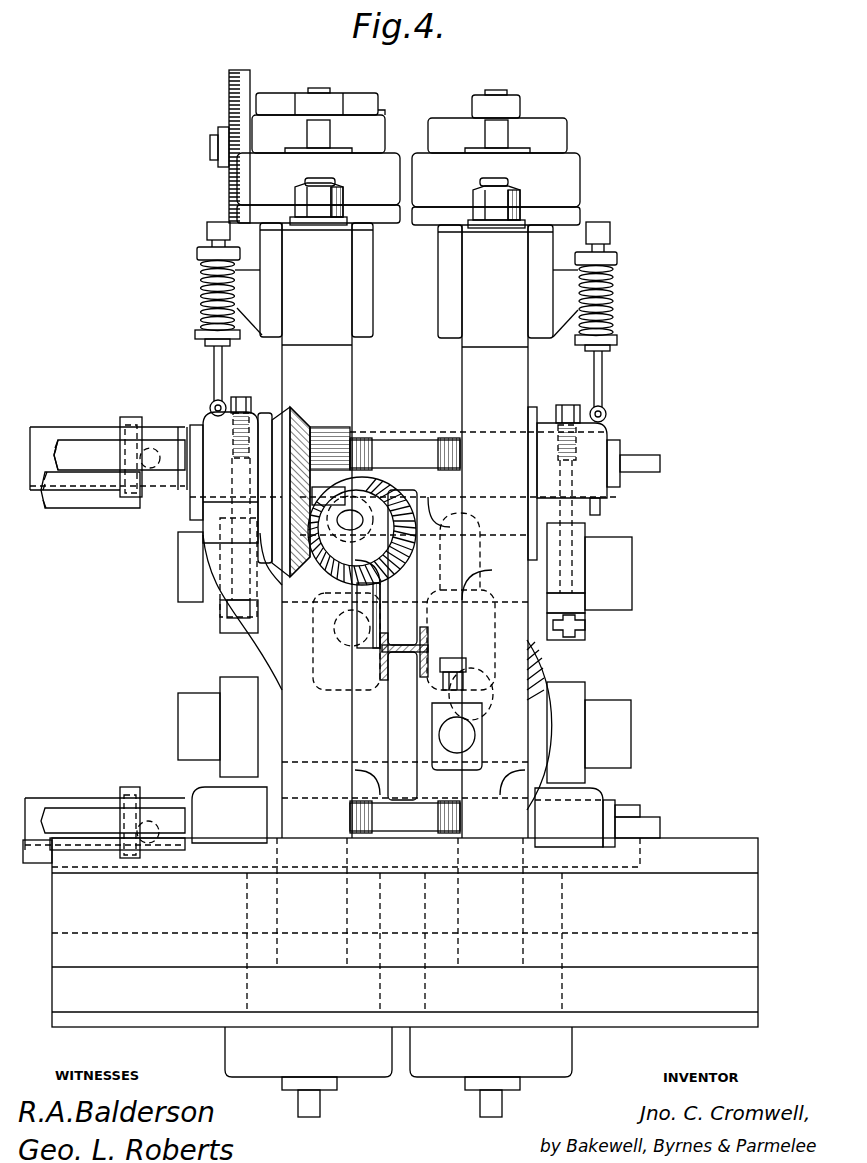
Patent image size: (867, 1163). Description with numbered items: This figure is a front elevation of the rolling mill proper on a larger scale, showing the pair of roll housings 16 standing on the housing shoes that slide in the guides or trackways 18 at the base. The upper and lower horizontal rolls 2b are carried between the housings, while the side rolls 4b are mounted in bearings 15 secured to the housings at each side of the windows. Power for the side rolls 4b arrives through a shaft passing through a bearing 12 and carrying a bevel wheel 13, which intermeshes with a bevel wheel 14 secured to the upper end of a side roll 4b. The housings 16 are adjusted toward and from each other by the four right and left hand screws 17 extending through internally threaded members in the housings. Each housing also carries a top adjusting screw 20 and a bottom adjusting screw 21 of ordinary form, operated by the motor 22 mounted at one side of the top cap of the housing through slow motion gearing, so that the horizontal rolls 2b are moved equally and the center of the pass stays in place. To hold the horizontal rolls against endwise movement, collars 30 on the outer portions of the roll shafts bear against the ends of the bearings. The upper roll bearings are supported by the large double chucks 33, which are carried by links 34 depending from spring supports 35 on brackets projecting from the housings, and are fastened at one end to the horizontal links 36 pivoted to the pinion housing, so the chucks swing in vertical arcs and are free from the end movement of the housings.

The motor 22 is at (353, 103).
The top adjusting screw 20 is at (330, 131).
The roll housing 16 is at (406, 530).
The spring support 35 is at (200, 303).
The link 34 is at (214, 376).
The bearing 12 is at (230, 543).
The horizontal link 36 is at (57, 432).
The right and left hand screw 17 is at (113, 456).
The bevel wheel 13 is at (298, 433).
The bevel wheel 14 is at (362, 531).
The horizontal roll 2b is at (405, 645).
The side roll 4b is at (455, 647).
The bearing 15 is at (358, 615).
The collar 30 is at (234, 690).
The double chuck 33 is at (628, 439).
The guide or trackway 18 is at (390, 932).
The bottom adjusting screw 21 is at (308, 1102).